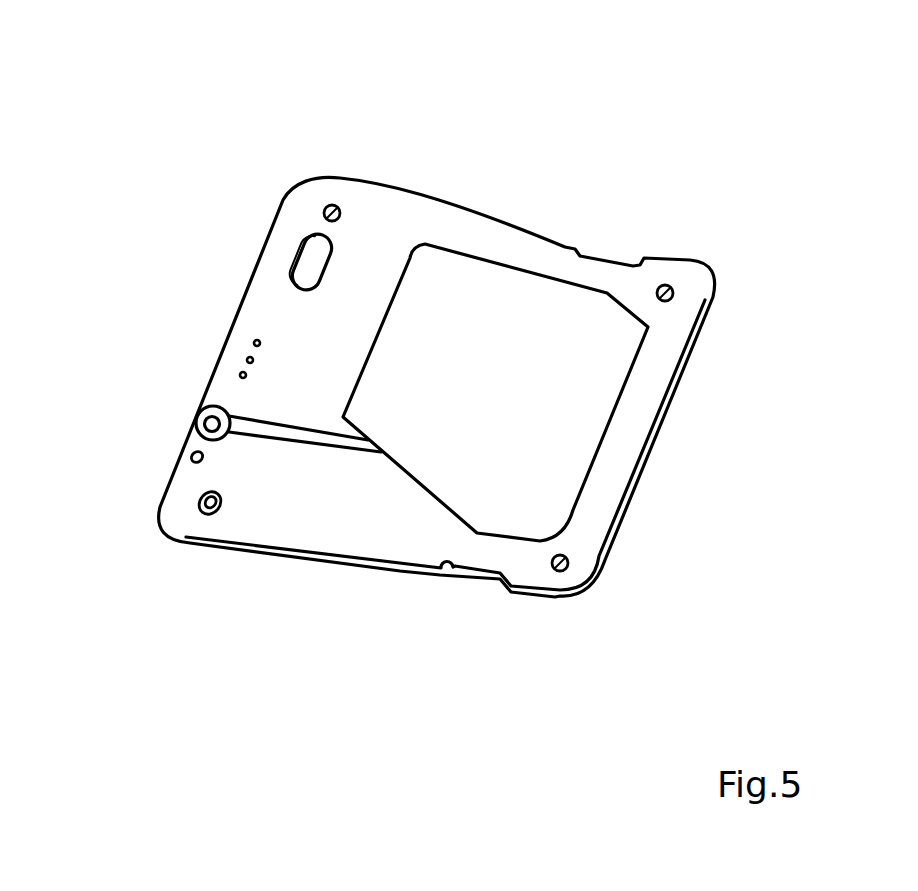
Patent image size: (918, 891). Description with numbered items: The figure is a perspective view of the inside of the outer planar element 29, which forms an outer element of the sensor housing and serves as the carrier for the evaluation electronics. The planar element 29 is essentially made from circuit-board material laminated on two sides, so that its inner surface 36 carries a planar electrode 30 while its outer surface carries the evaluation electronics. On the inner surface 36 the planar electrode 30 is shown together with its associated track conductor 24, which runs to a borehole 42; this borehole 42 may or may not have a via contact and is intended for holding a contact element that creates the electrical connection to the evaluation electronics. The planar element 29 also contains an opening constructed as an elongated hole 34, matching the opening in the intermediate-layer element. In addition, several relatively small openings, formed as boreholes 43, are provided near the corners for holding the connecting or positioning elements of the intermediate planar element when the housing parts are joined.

The track conductor 24 is at (278, 437).
The planar element 29 is at (384, 225).
The planar electrode 30 is at (527, 413).
The elongated hole 34 is at (310, 262).
The inner surface 36 is at (270, 330).
The borehole 42 is at (205, 422).
The boreholes 43 is at (330, 205).